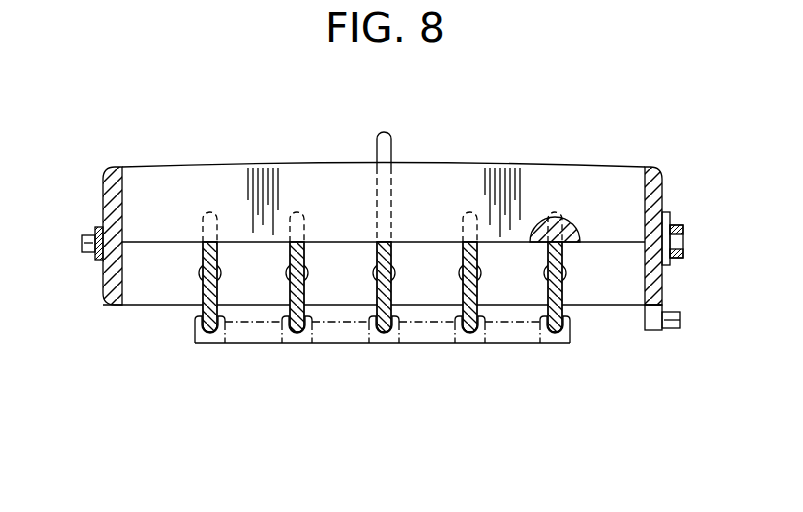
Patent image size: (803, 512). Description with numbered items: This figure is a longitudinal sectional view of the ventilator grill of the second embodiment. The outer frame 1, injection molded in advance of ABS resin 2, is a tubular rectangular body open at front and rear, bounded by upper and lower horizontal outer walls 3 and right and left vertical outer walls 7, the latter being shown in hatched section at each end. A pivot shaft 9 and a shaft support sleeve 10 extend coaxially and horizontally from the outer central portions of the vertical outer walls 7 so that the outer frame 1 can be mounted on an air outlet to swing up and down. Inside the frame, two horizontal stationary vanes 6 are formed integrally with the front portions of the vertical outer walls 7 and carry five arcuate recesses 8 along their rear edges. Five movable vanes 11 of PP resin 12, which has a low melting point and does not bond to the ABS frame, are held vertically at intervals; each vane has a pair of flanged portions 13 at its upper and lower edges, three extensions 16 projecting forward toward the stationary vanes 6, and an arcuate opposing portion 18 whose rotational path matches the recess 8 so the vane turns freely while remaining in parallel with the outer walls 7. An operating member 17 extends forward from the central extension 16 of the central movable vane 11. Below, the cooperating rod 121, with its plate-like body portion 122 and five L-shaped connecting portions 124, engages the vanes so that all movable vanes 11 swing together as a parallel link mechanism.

The outer frame 1 is at (379, 236).
The ABS resin 2 is at (379, 236).
The outer wall 3 is at (379, 236).
The stationary vane 6 is at (195, 180).
The vertical outer wall 7 is at (104, 203).
The arcuate recess 8 is at (212, 239).
The pivot shaft 9 is at (84, 244).
The shaft support sleeve 10 is at (683, 247).
The movable vane 11 is at (360, 276).
The PP resin 12 is at (360, 276).
The flanged portion 13 is at (202, 273).
The extension 16 is at (360, 276).
The operating member 17 is at (392, 143).
The opposing portion 18 is at (205, 221).
The cooperating rod 121 is at (390, 377).
The plate-like body portion 122 is at (390, 377).
The connecting portion 124 is at (209, 334).